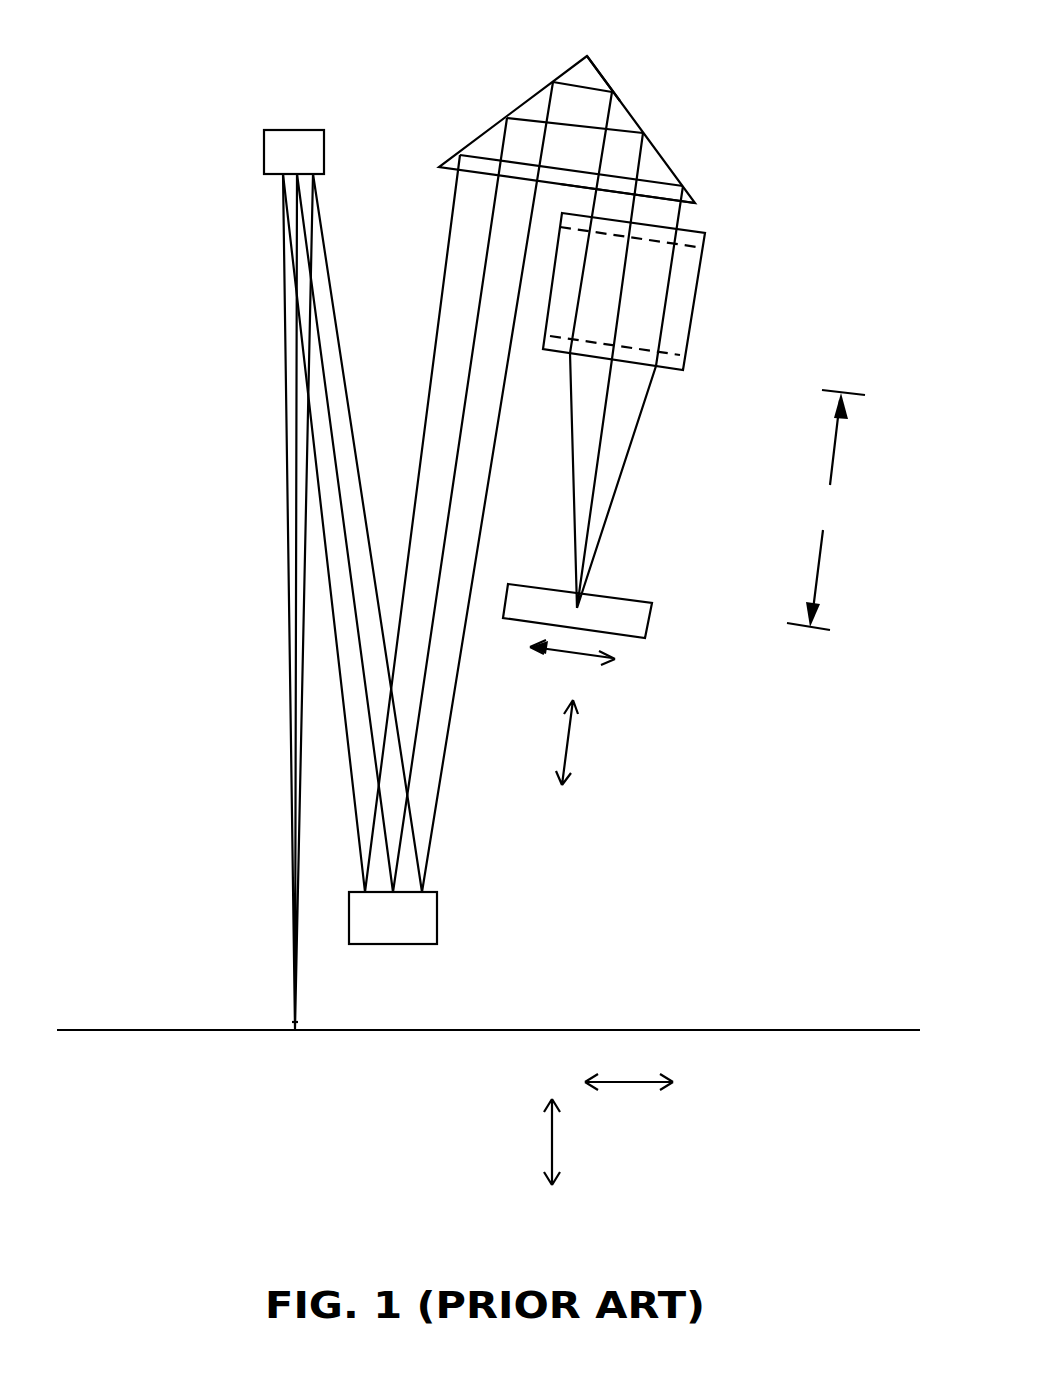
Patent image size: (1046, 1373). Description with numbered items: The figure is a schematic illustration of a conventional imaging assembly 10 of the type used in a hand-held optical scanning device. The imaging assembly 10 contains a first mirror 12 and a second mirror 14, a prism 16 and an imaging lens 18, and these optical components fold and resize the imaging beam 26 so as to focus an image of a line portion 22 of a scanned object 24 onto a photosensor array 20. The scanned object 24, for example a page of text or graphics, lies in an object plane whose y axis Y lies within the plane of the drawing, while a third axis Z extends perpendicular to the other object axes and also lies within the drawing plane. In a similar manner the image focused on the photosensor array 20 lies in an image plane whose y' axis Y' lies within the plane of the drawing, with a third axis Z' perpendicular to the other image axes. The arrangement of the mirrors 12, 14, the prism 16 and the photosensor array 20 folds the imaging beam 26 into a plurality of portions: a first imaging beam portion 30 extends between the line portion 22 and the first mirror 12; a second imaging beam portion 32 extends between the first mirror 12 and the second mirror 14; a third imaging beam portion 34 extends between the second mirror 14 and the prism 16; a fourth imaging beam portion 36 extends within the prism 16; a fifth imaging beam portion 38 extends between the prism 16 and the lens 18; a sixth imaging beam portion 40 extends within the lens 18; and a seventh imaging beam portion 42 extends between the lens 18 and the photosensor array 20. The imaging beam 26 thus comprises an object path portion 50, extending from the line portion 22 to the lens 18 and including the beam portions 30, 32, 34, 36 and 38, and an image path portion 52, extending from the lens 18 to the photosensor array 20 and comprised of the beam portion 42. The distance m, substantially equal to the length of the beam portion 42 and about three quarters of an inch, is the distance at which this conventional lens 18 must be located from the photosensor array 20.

The imaging assembly 10 is at (177, 94).
The first mirror 12 is at (294, 130).
The second mirror 14 is at (437, 918).
The prism 16 is at (635, 117).
The imaging lens 18 is at (693, 300).
The photosensor array 20 is at (652, 620).
The line portion 22 is at (295, 1030).
The scanned object 24 is at (825, 1030).
The imaging beam 26 is at (244, 393).
The first imaging beam portion 30 is at (290, 507).
The second imaging beam portion 32 is at (350, 507).
The third imaging beam portion 34 is at (447, 298).
The fourth imaging beam portion 36 is at (592, 97).
The fifth imaging beam portion 38 is at (672, 218).
The sixth imaging beam portion 40 is at (653, 328).
The seventh imaging beam portion 42 is at (608, 480).
The object path portion 50 is at (470, 767).
The image path portion 52 is at (678, 418).
The distance m is at (826, 510).
The y' axis Y' is at (582, 674).
The z' axis Z' is at (535, 742).
The y axis Y is at (629, 1117).
The z axis Z is at (521, 1142).